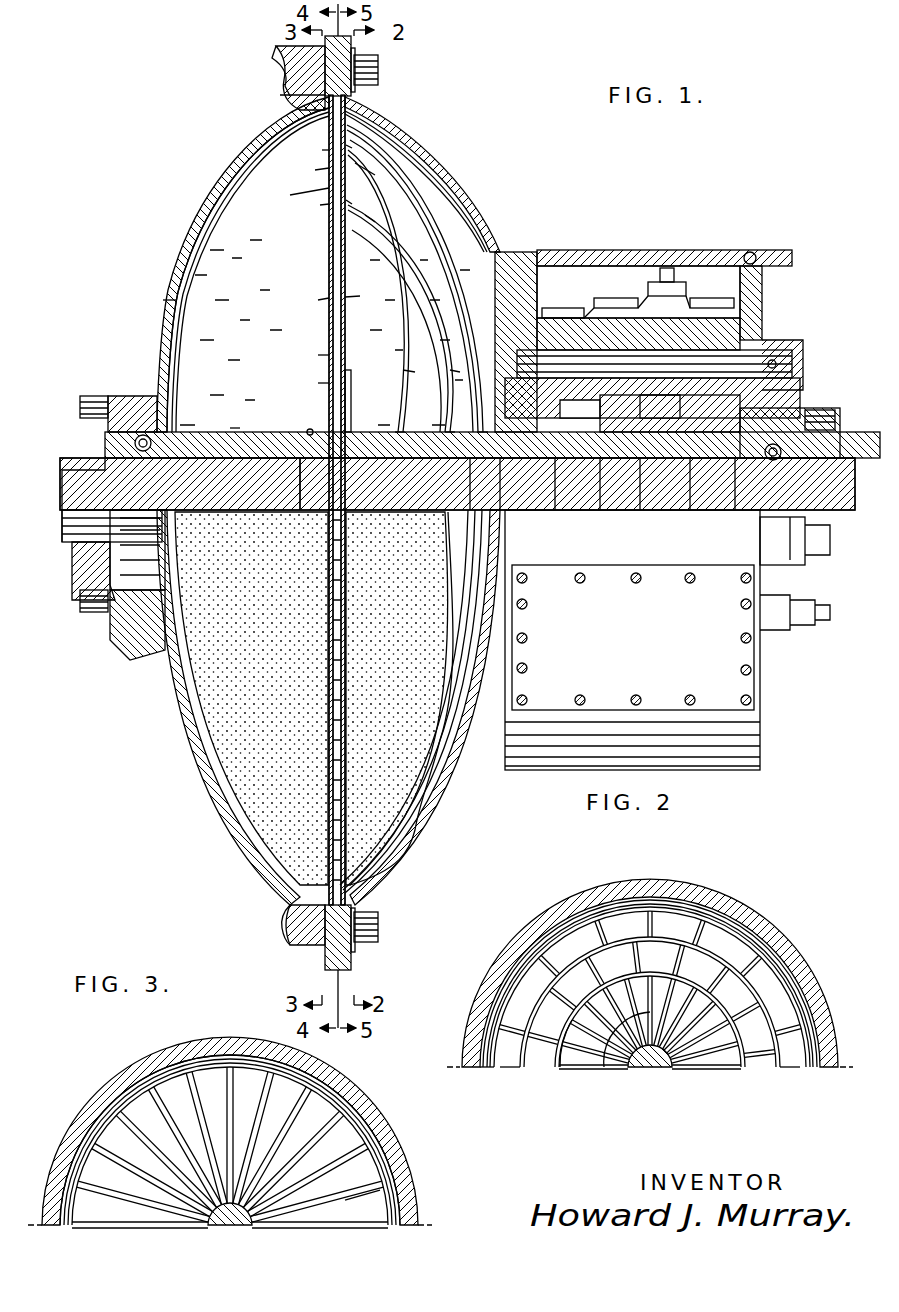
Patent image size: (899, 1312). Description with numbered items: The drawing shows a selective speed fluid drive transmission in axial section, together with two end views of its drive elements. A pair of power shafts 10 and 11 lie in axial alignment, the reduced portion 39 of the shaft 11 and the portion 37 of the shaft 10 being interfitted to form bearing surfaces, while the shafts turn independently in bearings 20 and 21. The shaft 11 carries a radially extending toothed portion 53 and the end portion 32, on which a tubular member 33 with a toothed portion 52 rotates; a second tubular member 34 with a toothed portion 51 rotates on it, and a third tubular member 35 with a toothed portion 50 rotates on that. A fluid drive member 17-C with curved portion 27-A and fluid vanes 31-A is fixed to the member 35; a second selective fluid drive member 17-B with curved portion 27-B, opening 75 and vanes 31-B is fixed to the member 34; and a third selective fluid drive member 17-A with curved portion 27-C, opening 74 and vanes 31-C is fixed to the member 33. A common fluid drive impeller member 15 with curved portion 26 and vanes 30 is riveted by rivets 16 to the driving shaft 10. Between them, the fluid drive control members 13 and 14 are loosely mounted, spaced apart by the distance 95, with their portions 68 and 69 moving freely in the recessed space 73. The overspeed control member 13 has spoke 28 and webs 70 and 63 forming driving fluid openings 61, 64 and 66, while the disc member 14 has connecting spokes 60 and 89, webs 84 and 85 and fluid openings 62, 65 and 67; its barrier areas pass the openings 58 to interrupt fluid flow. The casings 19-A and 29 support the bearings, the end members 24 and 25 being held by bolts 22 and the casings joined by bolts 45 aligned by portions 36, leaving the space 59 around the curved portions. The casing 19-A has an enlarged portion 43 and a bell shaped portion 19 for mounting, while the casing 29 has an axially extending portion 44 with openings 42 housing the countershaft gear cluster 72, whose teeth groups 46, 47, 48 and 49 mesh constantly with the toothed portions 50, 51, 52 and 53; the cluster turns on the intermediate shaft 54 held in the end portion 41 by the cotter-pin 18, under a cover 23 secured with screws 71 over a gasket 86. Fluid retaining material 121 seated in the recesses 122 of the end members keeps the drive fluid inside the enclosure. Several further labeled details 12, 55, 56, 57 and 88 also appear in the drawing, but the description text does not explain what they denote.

In FIG. 1, the power shaft 10 is at (70, 542).
In FIG. 1, the power shaft 11 is at (845, 490).
In FIG. 1, the housing block 12 is at (525, 262).
In FIG. 1, the overspeed fluid drive control member 13 is at (306, 299).
In FIG. 1, the drive control disc shaped member 14 is at (363, 293).
In FIG. 1, the common fluid drive impeller member 15 is at (237, 410).
In FIG. 3, the common fluid drive impeller member 15 is at (220, 1224).
In FIG. 1, the rivets 16 is at (318, 400).
In FIG. 1, the third selective fluid drive member 17-A is at (374, 421).
In FIG. 2, the third selective fluid drive member 17-A is at (626, 1065).
In FIG. 1, the second selective fluid drive member 17-B is at (437, 415).
In FIG. 2, the second selective fluid drive member 17-B is at (668, 1070).
In FIG. 1, the fluid drive member 17-C is at (487, 411).
In FIG. 1, the cotter-pin 18 is at (790, 345).
In FIG. 1, the bell shaped portion 19 is at (283, 46).
In FIG. 3, the bell shaped portion 19 is at (124, 1070).
In FIG. 1, the casing 19-A is at (185, 200).
In FIG. 1, the bearing 20 is at (134, 443).
In FIG. 1, the bearing 21 is at (805, 455).
In FIG. 1, the bolts 22 is at (836, 418).
In FIG. 1, the cover 23 is at (752, 253).
In FIG. 1, the end member 24 is at (112, 566).
In FIG. 1, the end member 25 is at (797, 582).
In FIG. 1, the curved portion 26 is at (166, 242).
In FIG. 3, the curved portion 26 is at (100, 1092).
In FIG. 1, the curved portion 27-A is at (382, 178).
In FIG. 2, the curved portion 27-A is at (605, 935).
In FIG. 1, the curved portion 27-B is at (402, 222).
In FIG. 2, the curved portion 27-B is at (778, 1062).
In FIG. 1, the curved portion 27-C is at (410, 288).
In FIG. 2, the curved portion 27-C is at (553, 1058).
In FIG. 1, the spoke 28 is at (304, 381).
In FIG. 1, the casing 29 is at (368, 110).
In FIG. 1, the fluid drive vanes 30 is at (232, 190).
In FIG. 3, the fluid drive vanes 30 is at (305, 1215).
In FIG. 1, the fluid vanes 31-A is at (408, 150).
In FIG. 2, the fluid vanes 31-A is at (748, 915).
In FIG. 1, the fluid drive vanes 31-B is at (425, 200).
In FIG. 2, the fluid drive vanes 31-B is at (776, 948).
In FIG. 1, the fluid drive vanes 31-C is at (448, 250).
In FIG. 2, the fluid drive vanes 31-C is at (805, 995).
In FIG. 1, the end portion 32 is at (457, 484).
In FIG. 2, the end portion 32 is at (650, 1070).
In FIG. 1, the tubular member 33 is at (555, 496).
In FIG. 1, the second tubular member 34 is at (455, 496).
In FIG. 1, the third tubular shaped member 35 is at (513, 496).
In FIG. 1, the portions 36 is at (352, 44).
In FIG. 2, the portions 36 is at (712, 896).
In FIG. 1, the portion 37 is at (492, 454).
In FIG. 1, the reduced portion 39 is at (300, 510).
In FIG. 3, the reduced portion 39 is at (230, 1228).
In FIG. 1, the end portion 41 is at (790, 388).
In FIG. 1, the openings 42 is at (762, 278).
In FIG. 1, the enlarged portion 43 is at (135, 400).
In FIG. 1, the axially extending portion 44 is at (638, 292).
In FIG. 1, the bolts 45 is at (370, 70).
In FIG. 1, the group of teeth 46 is at (563, 330).
In FIG. 1, the group of teeth 47 is at (612, 312).
In FIG. 1, the group of teeth 48 is at (663, 282).
In FIG. 1, the group of teeth 49 is at (712, 312).
In FIG. 1, the toothed portion 50 is at (595, 496).
In FIG. 1, the toothed portion 51 is at (640, 512).
In FIG. 1, the toothed portion 52 is at (671, 496).
In FIG. 1, the radially extending toothed portion 53 is at (718, 496).
In FIG. 1, the intermediate shaft 54 is at (790, 362).
In FIG. 3, the spoke 55 is at (348, 1212).
In FIG. 2, the rim 56 is at (495, 1010).
In FIG. 2, the partition rib 57 is at (560, 985).
In FIG. 2, the openings 58 is at (668, 920).
In FIG. 1, the space 59 is at (160, 283).
In FIG. 1, the connecting spoke 60 is at (440, 400).
In FIG. 1, the driving fluid opening 61 is at (330, 228).
In FIG. 1, the fluid opening 62 is at (342, 248).
In FIG. 1, the web 63 is at (308, 201).
In FIG. 1, the driving fluid opening 64 is at (290, 189).
In FIG. 1, the fluid opening 65 is at (363, 189).
In FIG. 1, the driving fluid opening 66 is at (312, 145).
In FIG. 1, the fluid opening 67 is at (363, 135).
In FIG. 1, the portion 68 is at (326, 90).
In FIG. 1, the portion 69 is at (385, 98).
In FIG. 1, the web 70 is at (305, 166).
In FIG. 1, the screws 71 is at (560, 250).
In FIG. 1, the countershaft gear cluster 72 is at (638, 323).
In FIG. 1, the recessed space 73 is at (280, 70).
In FIG. 2, the recessed space 73 is at (640, 900).
In FIG. 3, the recessed space 73 is at (152, 1050).
In FIG. 1, the opening 74 is at (418, 375).
In FIG. 1, the opening 75 is at (462, 370).
In FIG. 1, the web 84 is at (380, 162).
In FIG. 1, the web 85 is at (383, 215).
In FIG. 1, the gasket 86 is at (760, 258).
In FIG. 1, the hub base 88 is at (345, 496).
In FIG. 1, the connecting spoke 89 is at (312, 430).
In FIG. 1, the distance 95 is at (304, 353).
In FIG. 1, the fluid retaining material 121 is at (66, 484).
In FIG. 1, the recesses 122 is at (66, 514).